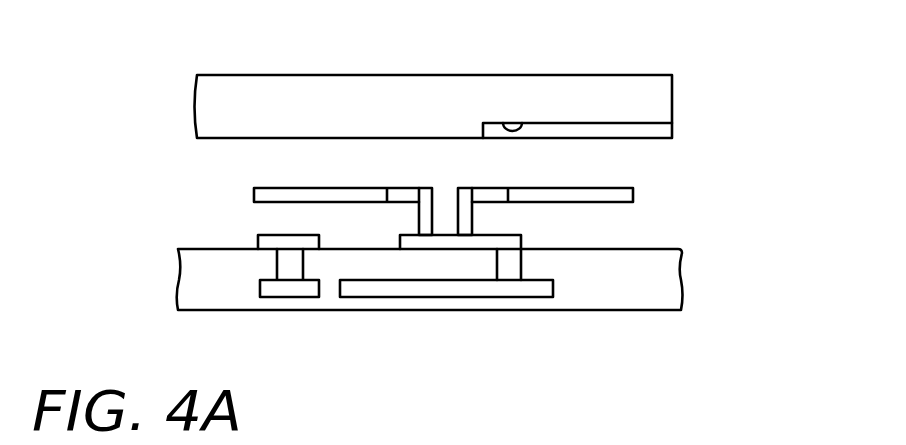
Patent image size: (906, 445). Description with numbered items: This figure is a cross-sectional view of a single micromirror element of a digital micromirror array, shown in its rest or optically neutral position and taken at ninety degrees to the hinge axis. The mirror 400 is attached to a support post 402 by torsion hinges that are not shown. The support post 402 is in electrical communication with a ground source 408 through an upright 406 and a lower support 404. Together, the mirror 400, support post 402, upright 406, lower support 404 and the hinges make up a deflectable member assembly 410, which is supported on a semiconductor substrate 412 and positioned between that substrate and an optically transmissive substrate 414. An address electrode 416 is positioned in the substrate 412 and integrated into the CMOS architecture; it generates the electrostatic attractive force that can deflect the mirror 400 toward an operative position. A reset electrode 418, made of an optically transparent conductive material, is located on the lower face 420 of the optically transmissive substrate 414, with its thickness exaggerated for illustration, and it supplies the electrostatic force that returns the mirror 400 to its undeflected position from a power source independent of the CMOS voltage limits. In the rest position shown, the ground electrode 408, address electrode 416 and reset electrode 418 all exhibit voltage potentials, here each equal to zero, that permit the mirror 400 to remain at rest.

The mirror 400 is at (707, 195).
The support post 402 is at (418, 217).
The lower support 404 is at (710, 255).
The upright 406 is at (577, 273).
The ground source 408 is at (415, 333).
The deflectable member assembly 410 is at (135, 133).
The semiconductor substrate 412 is at (430, 279).
The optically transmissive substrate 414 is at (434, 106).
The address electrode 416 is at (275, 330).
The reset electrode 418 is at (635, 142).
The lower face 420 is at (521, 124).